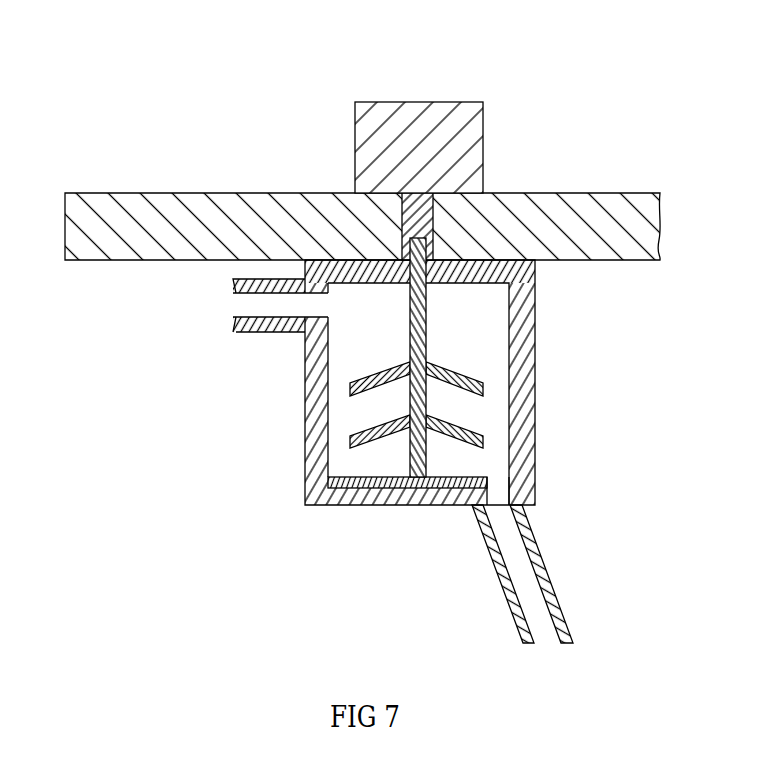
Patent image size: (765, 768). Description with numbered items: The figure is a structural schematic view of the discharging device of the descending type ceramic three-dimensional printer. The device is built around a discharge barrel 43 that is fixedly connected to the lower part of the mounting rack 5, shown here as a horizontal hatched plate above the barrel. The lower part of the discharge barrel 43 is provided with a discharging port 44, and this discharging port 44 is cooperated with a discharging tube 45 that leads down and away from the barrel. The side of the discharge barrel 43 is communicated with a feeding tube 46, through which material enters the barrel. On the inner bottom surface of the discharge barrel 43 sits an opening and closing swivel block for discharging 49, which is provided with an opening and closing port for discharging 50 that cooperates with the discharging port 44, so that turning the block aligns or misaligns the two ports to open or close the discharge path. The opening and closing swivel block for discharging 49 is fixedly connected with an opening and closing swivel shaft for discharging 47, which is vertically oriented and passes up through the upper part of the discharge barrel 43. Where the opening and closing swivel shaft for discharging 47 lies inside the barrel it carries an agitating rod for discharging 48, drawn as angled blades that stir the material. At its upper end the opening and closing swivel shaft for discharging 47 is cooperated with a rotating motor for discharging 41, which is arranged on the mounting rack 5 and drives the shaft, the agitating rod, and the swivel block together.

The mounting rack 5 is at (607, 220).
The rotating motor for discharging 41 is at (417, 130).
The discharge barrel 43 is at (482, 272).
The discharging port 44 is at (487, 497).
The discharging tube 45 is at (515, 558).
The feeding tube 46 is at (280, 307).
The opening and closing swivel shaft for discharging 47 is at (417, 317).
The agitating rod for discharging 48 is at (362, 387).
The opening and closing swivel block for discharging 49 is at (403, 480).
The opening and closing port for discharging 50 is at (498, 482).